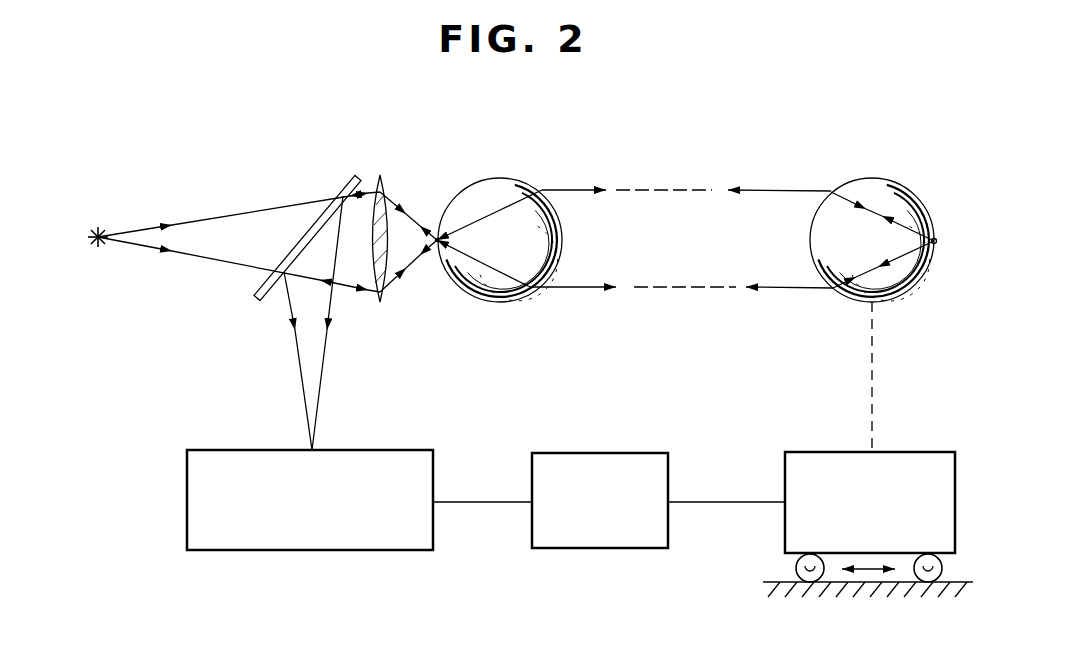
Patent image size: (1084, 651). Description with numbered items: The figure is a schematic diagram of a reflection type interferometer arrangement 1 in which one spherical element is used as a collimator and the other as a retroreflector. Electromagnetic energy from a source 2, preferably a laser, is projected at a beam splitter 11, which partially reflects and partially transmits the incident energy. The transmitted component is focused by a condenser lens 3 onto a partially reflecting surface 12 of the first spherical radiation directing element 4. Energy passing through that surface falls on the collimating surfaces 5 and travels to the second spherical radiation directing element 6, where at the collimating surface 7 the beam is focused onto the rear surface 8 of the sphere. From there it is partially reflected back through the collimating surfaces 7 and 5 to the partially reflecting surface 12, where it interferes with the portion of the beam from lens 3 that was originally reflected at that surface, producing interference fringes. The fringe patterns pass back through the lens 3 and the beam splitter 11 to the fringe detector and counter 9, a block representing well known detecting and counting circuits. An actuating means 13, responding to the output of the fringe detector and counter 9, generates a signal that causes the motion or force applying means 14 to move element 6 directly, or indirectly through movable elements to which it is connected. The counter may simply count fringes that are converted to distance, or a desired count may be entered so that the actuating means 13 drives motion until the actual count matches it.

The interferometer arrangement 1 is at (689, 158).
The source 2 is at (98, 226).
The condenser lens 3 is at (382, 178).
The spherical radiation directing element 4 is at (484, 178).
The collimating surfaces 5 is at (541, 188).
The spherical radiation directing element 6 is at (885, 180).
The collimating surface 7 is at (830, 188).
The rear surface 8 is at (937, 242).
The fringe detector and counter 9 is at (390, 450).
The beam splitter 11 is at (347, 186).
The partially reflecting surface 12 is at (436, 236).
The actuating means 13 is at (606, 452).
The motion or force applying means 14 is at (912, 452).